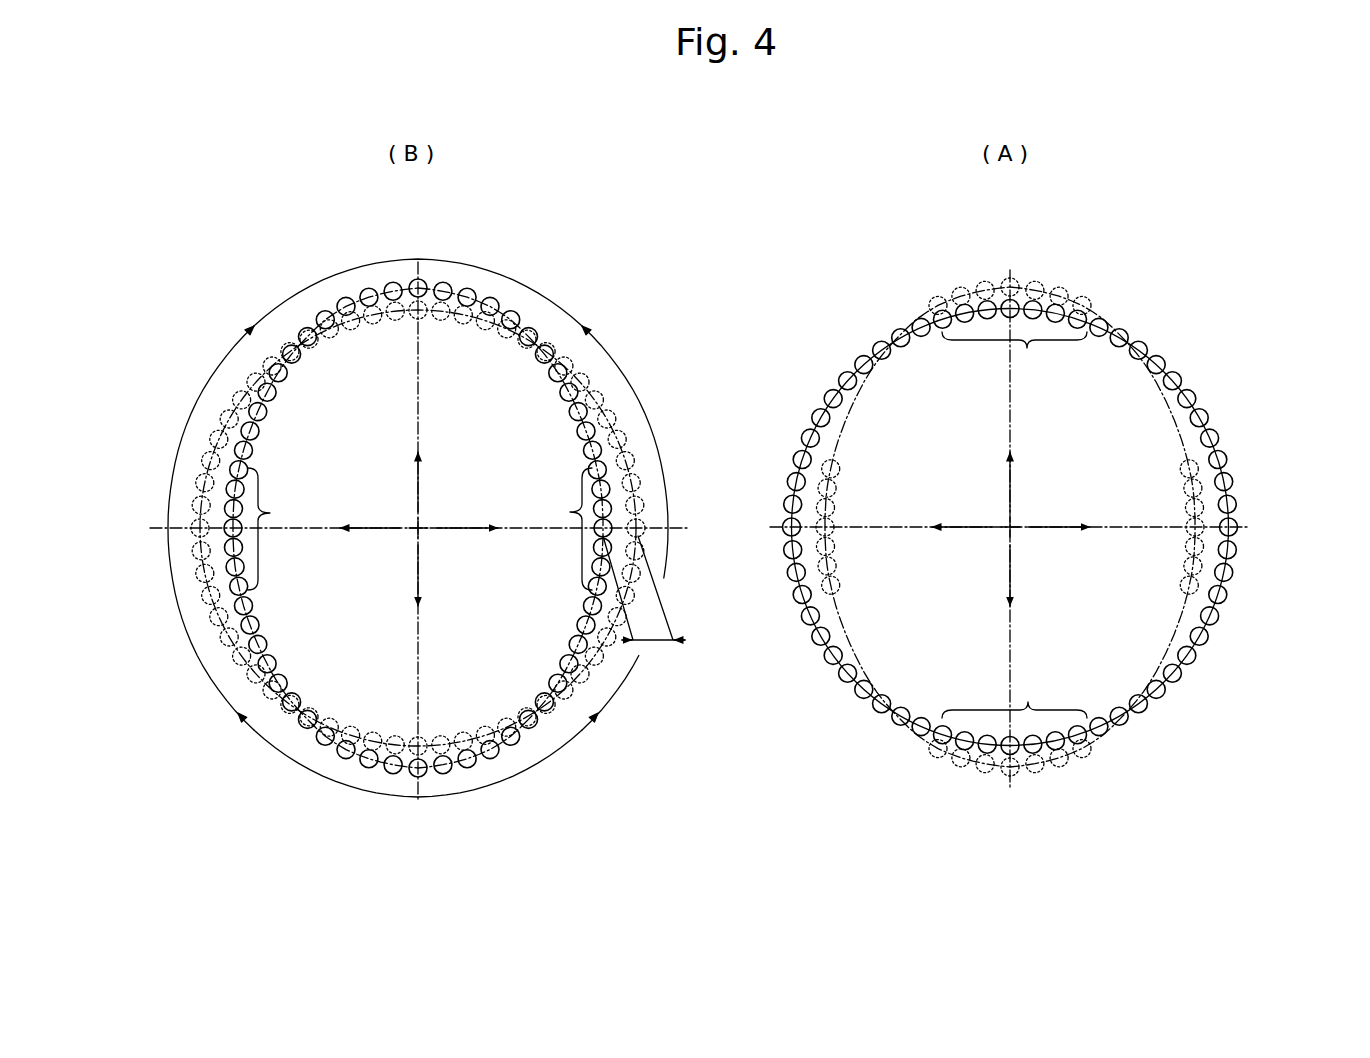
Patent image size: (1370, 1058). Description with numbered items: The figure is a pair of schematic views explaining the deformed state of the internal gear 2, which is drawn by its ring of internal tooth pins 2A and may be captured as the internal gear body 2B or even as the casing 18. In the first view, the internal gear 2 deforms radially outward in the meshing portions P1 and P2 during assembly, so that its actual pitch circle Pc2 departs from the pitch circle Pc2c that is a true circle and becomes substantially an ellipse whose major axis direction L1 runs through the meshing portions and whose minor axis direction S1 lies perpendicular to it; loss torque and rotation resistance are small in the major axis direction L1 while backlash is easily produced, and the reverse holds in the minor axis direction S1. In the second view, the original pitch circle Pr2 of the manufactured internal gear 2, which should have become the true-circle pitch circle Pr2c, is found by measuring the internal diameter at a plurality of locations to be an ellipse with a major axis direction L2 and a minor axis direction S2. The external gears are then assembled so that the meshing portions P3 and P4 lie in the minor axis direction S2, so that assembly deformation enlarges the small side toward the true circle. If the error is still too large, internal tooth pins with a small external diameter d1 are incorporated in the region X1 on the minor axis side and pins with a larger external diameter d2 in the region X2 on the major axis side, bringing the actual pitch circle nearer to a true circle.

In FIG. 4A, the internal gear 2 is at (1185, 684).
In FIG. 4B, the internal gear 2 is at (527, 745).
In FIG. 4A, the internal tooth pins 2A is at (1162, 699).
In FIG. 4B, the internal tooth pins 2A is at (467, 749).
In FIG. 4A, the internal gear body 2B is at (1257, 642).
In FIG. 4A, the casing 18 is at (1219, 621).
In FIG. 4B, the region on the minor axis side X1 is at (667, 491).
In FIG. 4B, the region on the major axis side X2 is at (461, 262).
In FIG. 4A, the major axis direction L1 is at (1013, 475).
In FIG. 4B, the major axis direction L2 is at (421, 475).
In FIG. 4A, the minor axis direction S1 is at (1053, 530).
In FIG. 4B, the minor axis direction S2 is at (463, 530).
In FIG. 4A, the meshing portion P1 is at (1014, 357).
In FIG. 4A, the meshing portion P2 is at (1014, 696).
In FIG. 4B, the meshing portion P3 is at (565, 529).
In FIG. 4B, the meshing portion P4 is at (276, 529).
In FIG. 4B, the small external diameter d1 is at (252, 511).
In FIG. 4B, the larger external diameter d2 is at (396, 309).
In FIG. 4B, the original pitch circle Pr2 is at (606, 428).
In FIG. 4B, the pitch circle of the true circle Pr2c is at (591, 391).
In FIG. 4A, the actual pitch circle Pc2 is at (1194, 470).
In FIG. 4A, the pitch circle that is a true circle Pc2c is at (1204, 427).